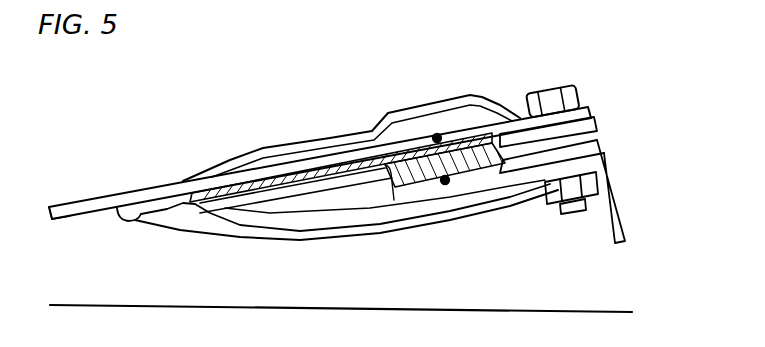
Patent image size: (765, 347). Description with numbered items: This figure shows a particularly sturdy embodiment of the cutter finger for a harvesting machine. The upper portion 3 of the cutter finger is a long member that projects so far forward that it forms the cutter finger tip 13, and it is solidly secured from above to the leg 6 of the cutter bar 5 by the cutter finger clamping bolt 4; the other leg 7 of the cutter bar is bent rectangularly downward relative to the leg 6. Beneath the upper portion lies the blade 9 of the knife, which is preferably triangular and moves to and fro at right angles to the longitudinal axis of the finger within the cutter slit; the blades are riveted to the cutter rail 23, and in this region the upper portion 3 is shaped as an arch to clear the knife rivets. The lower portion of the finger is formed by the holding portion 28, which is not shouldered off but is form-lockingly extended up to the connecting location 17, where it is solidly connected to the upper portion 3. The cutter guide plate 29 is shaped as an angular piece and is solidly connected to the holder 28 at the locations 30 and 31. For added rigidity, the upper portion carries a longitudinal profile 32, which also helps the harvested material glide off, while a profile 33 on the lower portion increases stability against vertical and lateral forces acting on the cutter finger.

The upper portion of the cutter finger 3 is at (166, 183).
The cutter finger clamping bolt 4 is at (572, 100).
The cutter bar 5 is at (600, 147).
The leg of cutter bar 6 is at (577, 152).
The leg of the cutter bar 7 is at (622, 205).
The blade of the knife 9 is at (337, 167).
The cutter finger tip 13 is at (66, 221).
The connecting location 17 is at (130, 214).
The cutter rail 23 is at (481, 158).
The holding portion 28 is at (378, 208).
The cutter guide plate 29 is at (310, 185).
The connection location 30 is at (403, 190).
The connection location 31 is at (222, 203).
The profile 32 is at (293, 147).
The profile 33 is at (470, 212).